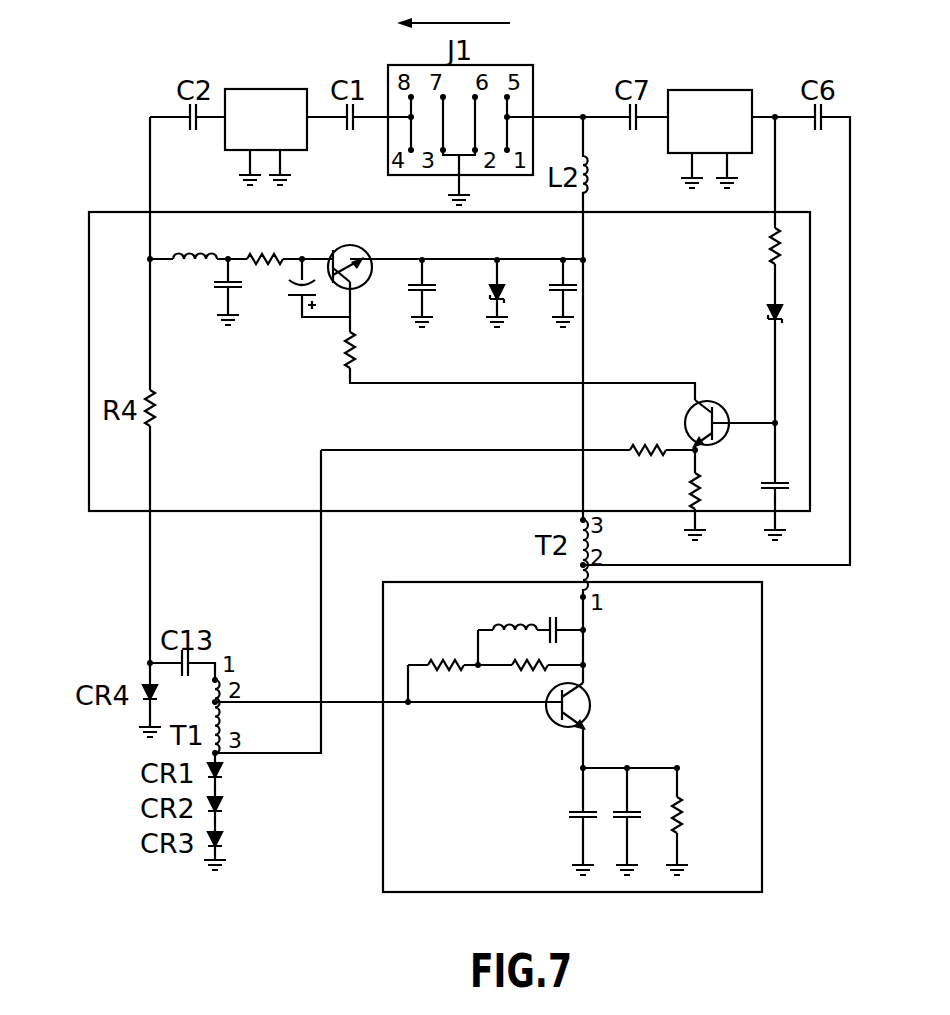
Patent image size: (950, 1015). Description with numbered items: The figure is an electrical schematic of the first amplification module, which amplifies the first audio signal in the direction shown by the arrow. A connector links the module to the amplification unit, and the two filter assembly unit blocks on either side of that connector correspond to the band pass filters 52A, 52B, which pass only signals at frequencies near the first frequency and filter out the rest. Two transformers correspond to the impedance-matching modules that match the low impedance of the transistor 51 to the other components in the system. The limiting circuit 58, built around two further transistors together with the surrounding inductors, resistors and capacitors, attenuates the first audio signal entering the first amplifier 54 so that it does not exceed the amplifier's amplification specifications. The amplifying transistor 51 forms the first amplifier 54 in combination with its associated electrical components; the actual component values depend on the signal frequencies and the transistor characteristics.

The transistor 51 is at (608, 712).
The band pass filter 52A is at (258, 78).
The band pass filter 52B is at (730, 78).
The first amplifier 54 is at (626, 737).
The limiting circuit 58 is at (80, 305).